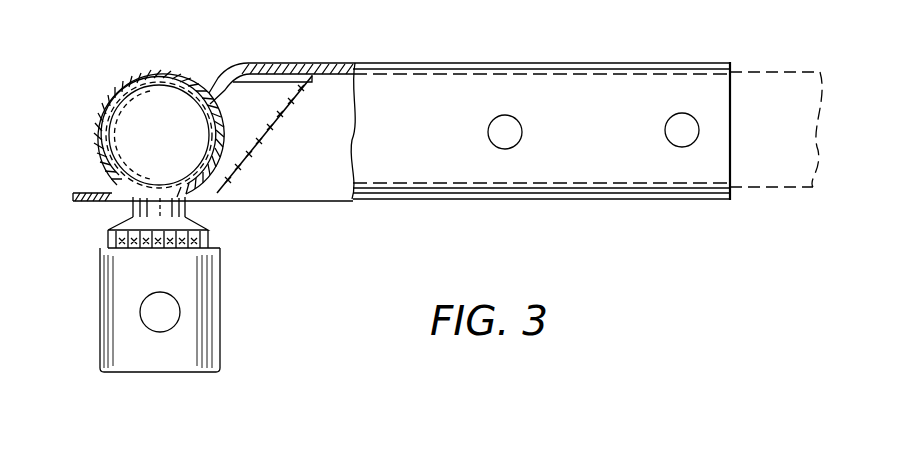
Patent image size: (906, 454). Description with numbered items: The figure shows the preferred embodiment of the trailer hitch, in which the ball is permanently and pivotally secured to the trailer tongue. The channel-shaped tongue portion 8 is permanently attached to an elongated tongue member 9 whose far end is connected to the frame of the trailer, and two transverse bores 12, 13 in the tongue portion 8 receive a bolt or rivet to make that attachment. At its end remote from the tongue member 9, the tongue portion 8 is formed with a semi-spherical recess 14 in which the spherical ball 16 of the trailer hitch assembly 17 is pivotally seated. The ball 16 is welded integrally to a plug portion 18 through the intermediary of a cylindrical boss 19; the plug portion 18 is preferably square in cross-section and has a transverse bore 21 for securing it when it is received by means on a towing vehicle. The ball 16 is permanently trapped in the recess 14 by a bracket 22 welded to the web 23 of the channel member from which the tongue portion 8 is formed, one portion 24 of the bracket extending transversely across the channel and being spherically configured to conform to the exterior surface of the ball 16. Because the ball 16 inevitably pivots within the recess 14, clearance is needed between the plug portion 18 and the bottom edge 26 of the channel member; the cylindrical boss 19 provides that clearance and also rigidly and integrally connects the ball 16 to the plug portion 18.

The tongue portion 8 is at (512, 58).
The elongated tongue member 9 is at (783, 67).
The transverse bore 12 is at (507, 127).
The transverse bore 13 is at (675, 123).
The semi-spherical recess 14 is at (132, 97).
The spherical ball 16 is at (118, 134).
The trailer hitch assembly 17 is at (85, 284).
The plug portion 18 is at (210, 288).
The cylindrical boss 19 is at (186, 208).
The transverse bore 21 is at (160, 326).
The bracket 22 is at (268, 128).
The web 23 is at (352, 63).
The bracket portion 24 is at (223, 127).
The bottom edge 26 is at (322, 200).